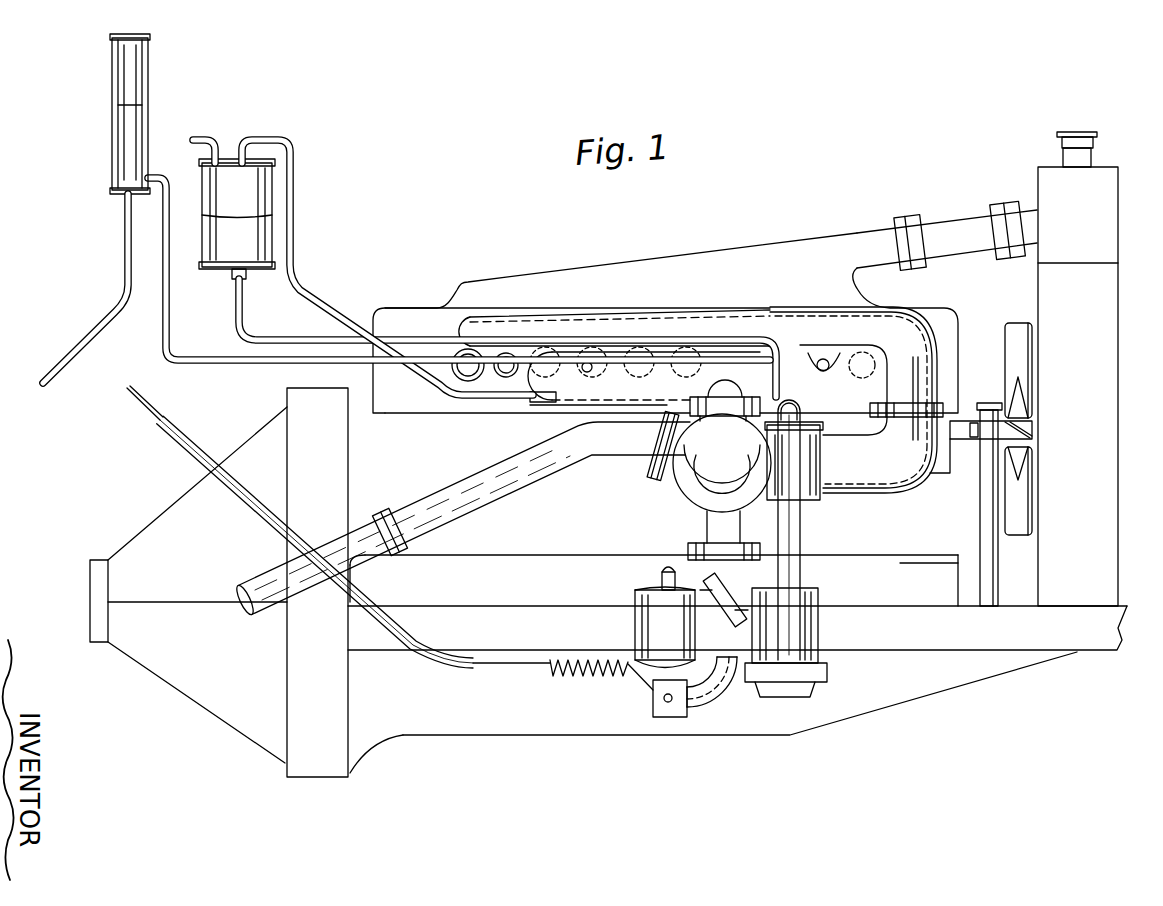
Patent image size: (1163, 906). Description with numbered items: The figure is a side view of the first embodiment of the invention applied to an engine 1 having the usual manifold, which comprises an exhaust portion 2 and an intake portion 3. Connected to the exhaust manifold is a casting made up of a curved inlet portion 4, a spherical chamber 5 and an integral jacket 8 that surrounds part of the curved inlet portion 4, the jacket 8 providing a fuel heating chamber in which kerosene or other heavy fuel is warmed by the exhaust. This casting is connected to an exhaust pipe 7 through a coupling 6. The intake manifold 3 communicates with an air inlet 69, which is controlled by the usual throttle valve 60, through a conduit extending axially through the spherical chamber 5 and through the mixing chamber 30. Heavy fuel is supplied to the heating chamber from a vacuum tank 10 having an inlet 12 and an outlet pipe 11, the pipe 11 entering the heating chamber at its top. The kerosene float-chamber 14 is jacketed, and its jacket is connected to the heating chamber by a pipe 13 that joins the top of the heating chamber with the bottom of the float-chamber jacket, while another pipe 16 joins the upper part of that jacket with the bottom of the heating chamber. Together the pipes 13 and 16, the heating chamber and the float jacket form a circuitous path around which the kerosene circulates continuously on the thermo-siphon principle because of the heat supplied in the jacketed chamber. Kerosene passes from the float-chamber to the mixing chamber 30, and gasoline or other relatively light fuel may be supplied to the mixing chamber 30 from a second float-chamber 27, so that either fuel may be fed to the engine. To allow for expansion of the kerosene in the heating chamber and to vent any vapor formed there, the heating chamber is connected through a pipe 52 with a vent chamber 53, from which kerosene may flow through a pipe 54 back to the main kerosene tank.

The engine 1 is at (363, 425).
The exhaust portion 2 is at (643, 327).
The intake portion 3 is at (540, 403).
The curved inlet portion 4 is at (922, 478).
The spherical chamber 5 is at (672, 490).
The coupling 6 is at (650, 457).
The exhaust pipe 7 is at (493, 494).
The jacket 8 is at (818, 502).
The vacuum tank 10 is at (213, 187).
The outlet pipe 11 is at (237, 313).
The inlet 12 is at (210, 140).
The pipe 13 is at (801, 406).
The kerosene float-chamber 14 is at (817, 653).
The pipe 16 is at (800, 540).
The float-chamber 27 is at (655, 633).
The mixing chamber 30 is at (737, 595).
The pipe 52 is at (163, 283).
The vent chamber 53 is at (128, 147).
The pipe 54 is at (80, 342).
The throttle valve 60 is at (652, 700).
The air inlet 69 is at (717, 703).